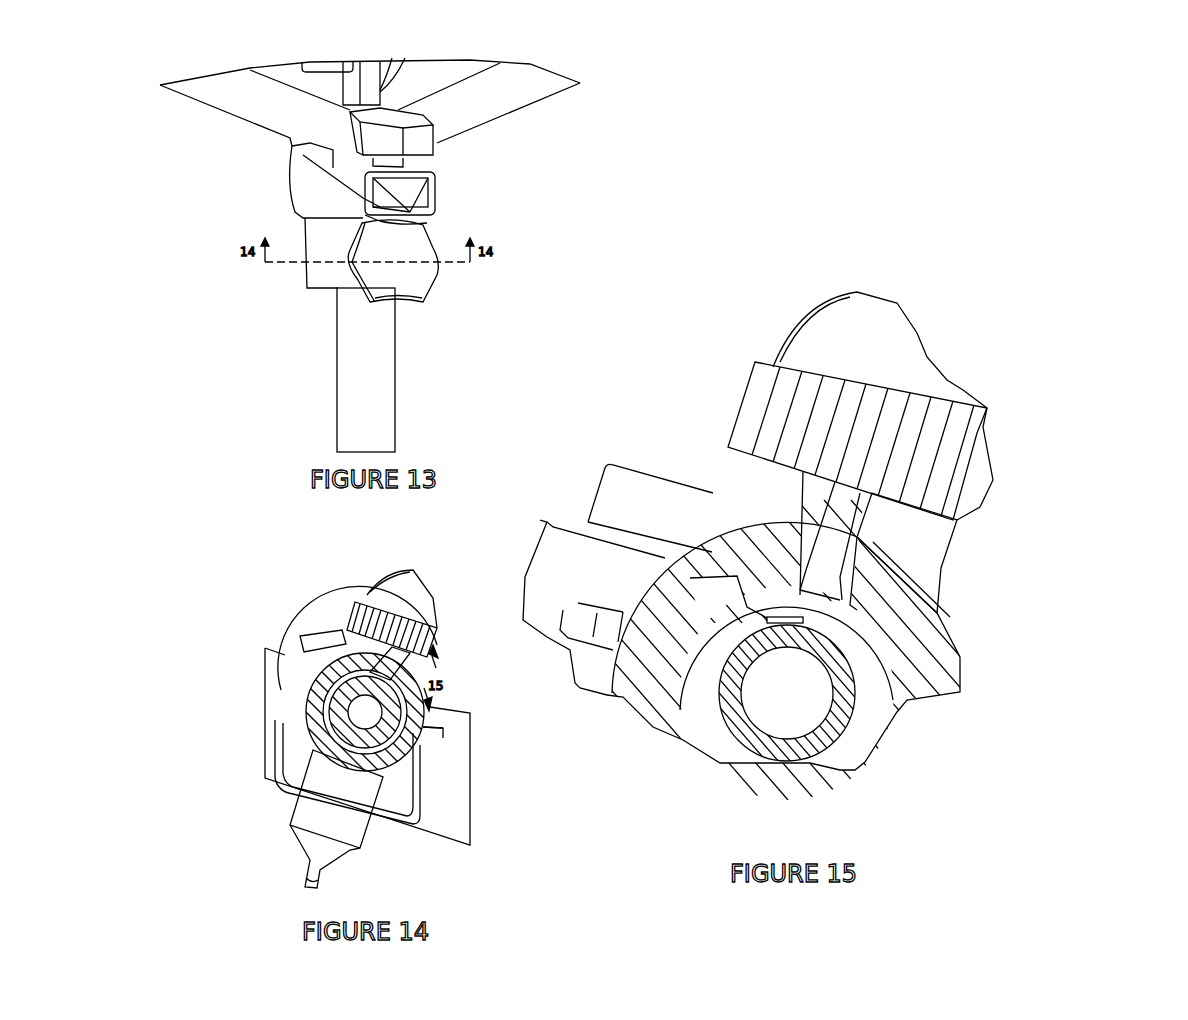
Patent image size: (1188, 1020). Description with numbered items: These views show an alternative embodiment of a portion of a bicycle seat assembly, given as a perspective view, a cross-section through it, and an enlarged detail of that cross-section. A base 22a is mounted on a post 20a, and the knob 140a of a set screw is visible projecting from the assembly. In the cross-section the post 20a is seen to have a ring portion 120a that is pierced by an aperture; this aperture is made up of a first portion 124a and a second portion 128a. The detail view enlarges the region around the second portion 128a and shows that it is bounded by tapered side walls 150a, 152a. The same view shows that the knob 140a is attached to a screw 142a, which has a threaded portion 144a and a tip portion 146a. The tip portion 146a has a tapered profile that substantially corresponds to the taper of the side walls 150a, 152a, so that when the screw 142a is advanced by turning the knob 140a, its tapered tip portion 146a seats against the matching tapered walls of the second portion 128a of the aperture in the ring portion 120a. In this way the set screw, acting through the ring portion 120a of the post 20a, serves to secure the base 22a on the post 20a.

In FIG. 13, the post 20a is at (280, 302).
In FIG. 14, the post 20a is at (187, 742).
In FIG. 13, the base 22a is at (347, 167).
In FIG. 14, the base 22a is at (330, 668).
In FIG. 15, the base 22a is at (923, 652).
In FIG. 14, the ring portion 120a is at (435, 722).
In FIG. 15, the ring portion 120a is at (710, 733).
In FIG. 14, the first portion 124a is at (308, 720).
In FIG. 14, the second portion 128a is at (362, 685).
In FIG. 13, the knob 140a is at (407, 275).
In FIG. 14, the knob 140a is at (370, 628).
In FIG. 15, the knob 140a is at (863, 430).
In FIG. 15, the screw 142a is at (913, 533).
In FIG. 15, the threaded portion 144a is at (845, 510).
In FIG. 15, the tip portion 146a is at (700, 540).
In FIG. 15, the tapered side wall 150a is at (720, 590).
In FIG. 15, the tapered side wall 152a is at (853, 622).